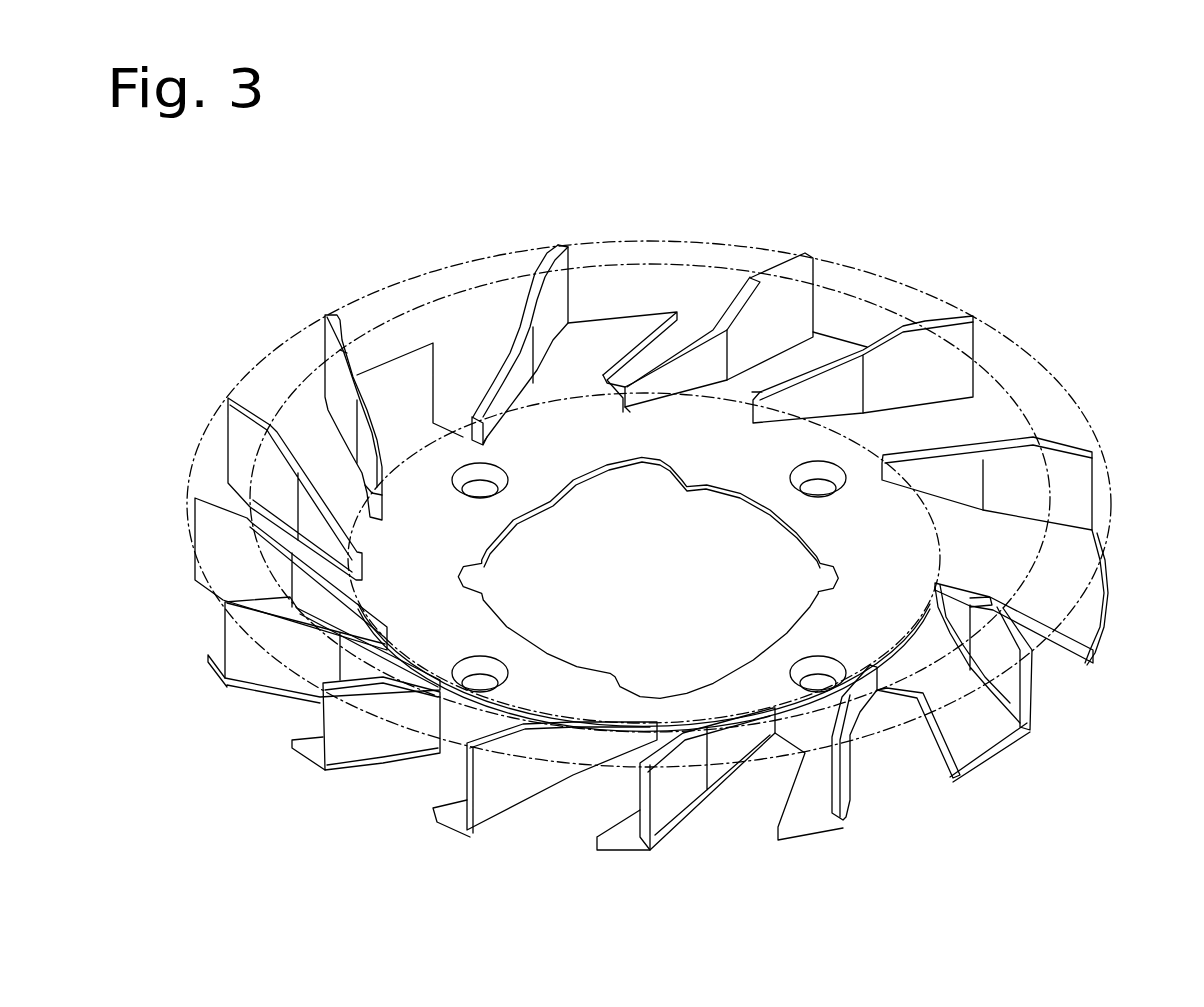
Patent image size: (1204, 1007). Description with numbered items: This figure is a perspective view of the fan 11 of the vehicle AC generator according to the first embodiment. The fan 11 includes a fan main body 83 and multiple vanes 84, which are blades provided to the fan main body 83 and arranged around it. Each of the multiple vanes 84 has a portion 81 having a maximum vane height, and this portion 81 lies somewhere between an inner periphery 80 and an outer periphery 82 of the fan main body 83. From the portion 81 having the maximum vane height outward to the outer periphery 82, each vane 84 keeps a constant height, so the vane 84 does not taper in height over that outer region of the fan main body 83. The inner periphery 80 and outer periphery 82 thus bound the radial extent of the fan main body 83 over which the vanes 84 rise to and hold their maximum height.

The fan 11 is at (404, 240).
The inner periphery 80 is at (742, 385).
The portion having a maximum vane height 81 is at (990, 377).
The outer periphery 82 is at (1067, 392).
The fan main body 83 is at (603, 345).
The vane 84 is at (770, 327).